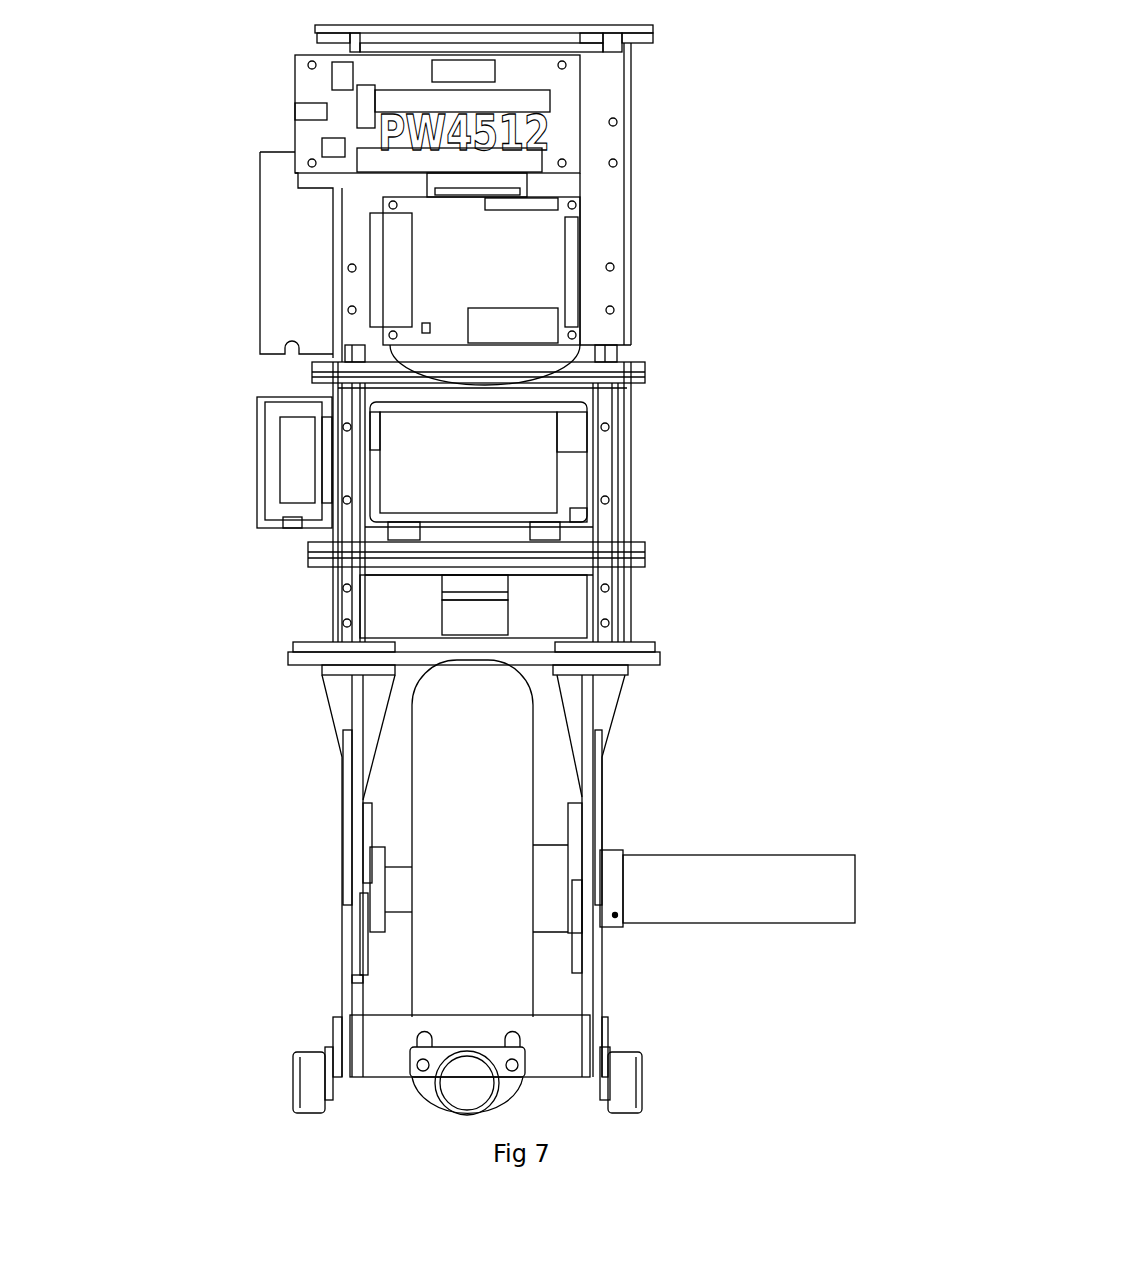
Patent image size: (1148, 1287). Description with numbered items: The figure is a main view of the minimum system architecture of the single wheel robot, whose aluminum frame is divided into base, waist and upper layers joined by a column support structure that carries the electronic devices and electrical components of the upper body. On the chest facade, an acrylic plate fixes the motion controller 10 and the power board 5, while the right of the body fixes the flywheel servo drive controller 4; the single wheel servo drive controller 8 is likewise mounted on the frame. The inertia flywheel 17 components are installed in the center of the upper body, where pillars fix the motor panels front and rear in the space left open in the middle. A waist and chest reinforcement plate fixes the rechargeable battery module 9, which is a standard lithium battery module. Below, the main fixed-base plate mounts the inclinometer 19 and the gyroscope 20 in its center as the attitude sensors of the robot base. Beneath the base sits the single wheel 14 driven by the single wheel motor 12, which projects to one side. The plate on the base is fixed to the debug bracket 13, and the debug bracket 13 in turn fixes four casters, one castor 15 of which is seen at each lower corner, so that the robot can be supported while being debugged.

The flywheel servo drive controller 4 is at (322, 292).
The power board 5 is at (592, 158).
The single wheel servo drive controller 8 is at (302, 443).
The rechargeable battery module 9 is at (543, 470).
The motion controller 10 is at (397, 217).
The single wheel motor 12 is at (705, 897).
The debug bracket 13 is at (398, 1032).
The single wheel 14 is at (528, 773).
The castor 15 is at (323, 1090).
The inertia flywheel 17 is at (572, 333).
The inclinometer 19 is at (475, 585).
The gyroscope 20 is at (512, 625).